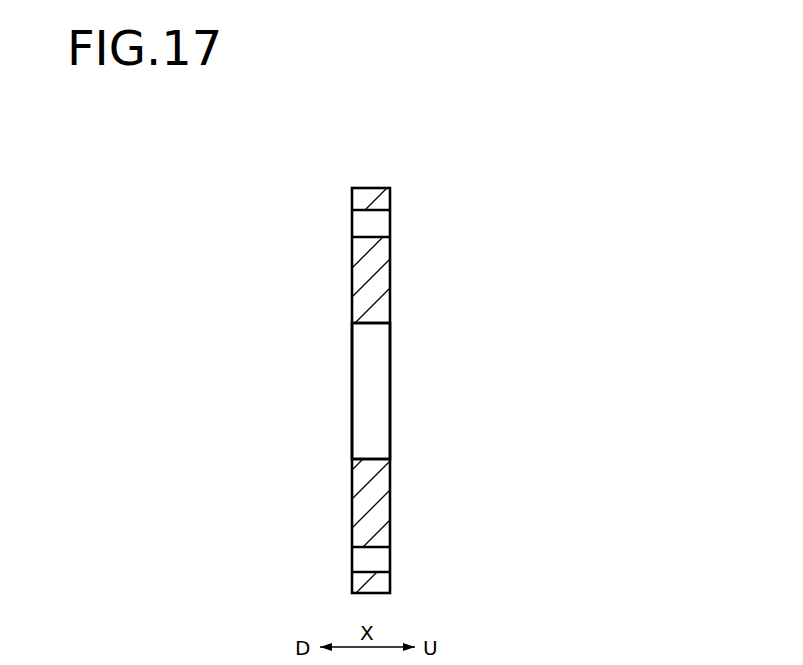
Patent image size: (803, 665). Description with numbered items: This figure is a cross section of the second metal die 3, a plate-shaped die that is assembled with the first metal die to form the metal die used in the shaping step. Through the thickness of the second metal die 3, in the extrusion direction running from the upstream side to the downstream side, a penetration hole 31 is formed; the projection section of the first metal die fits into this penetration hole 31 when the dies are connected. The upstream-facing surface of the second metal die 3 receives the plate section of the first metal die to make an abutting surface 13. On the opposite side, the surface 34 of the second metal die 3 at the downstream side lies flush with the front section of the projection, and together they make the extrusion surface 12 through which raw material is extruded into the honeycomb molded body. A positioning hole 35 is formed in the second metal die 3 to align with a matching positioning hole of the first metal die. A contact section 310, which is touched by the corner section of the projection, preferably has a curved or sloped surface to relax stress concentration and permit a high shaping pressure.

The second metal die 3 is at (417, 167).
The extrusion surface 12 is at (351, 527).
The abutting surface 13 is at (390, 482).
The penetration hole 31 is at (370, 388).
The surface of the second metal die at the downstream side 34 is at (351, 492).
The positioning hole 35 is at (372, 218).
The contact section 310 is at (390, 325).